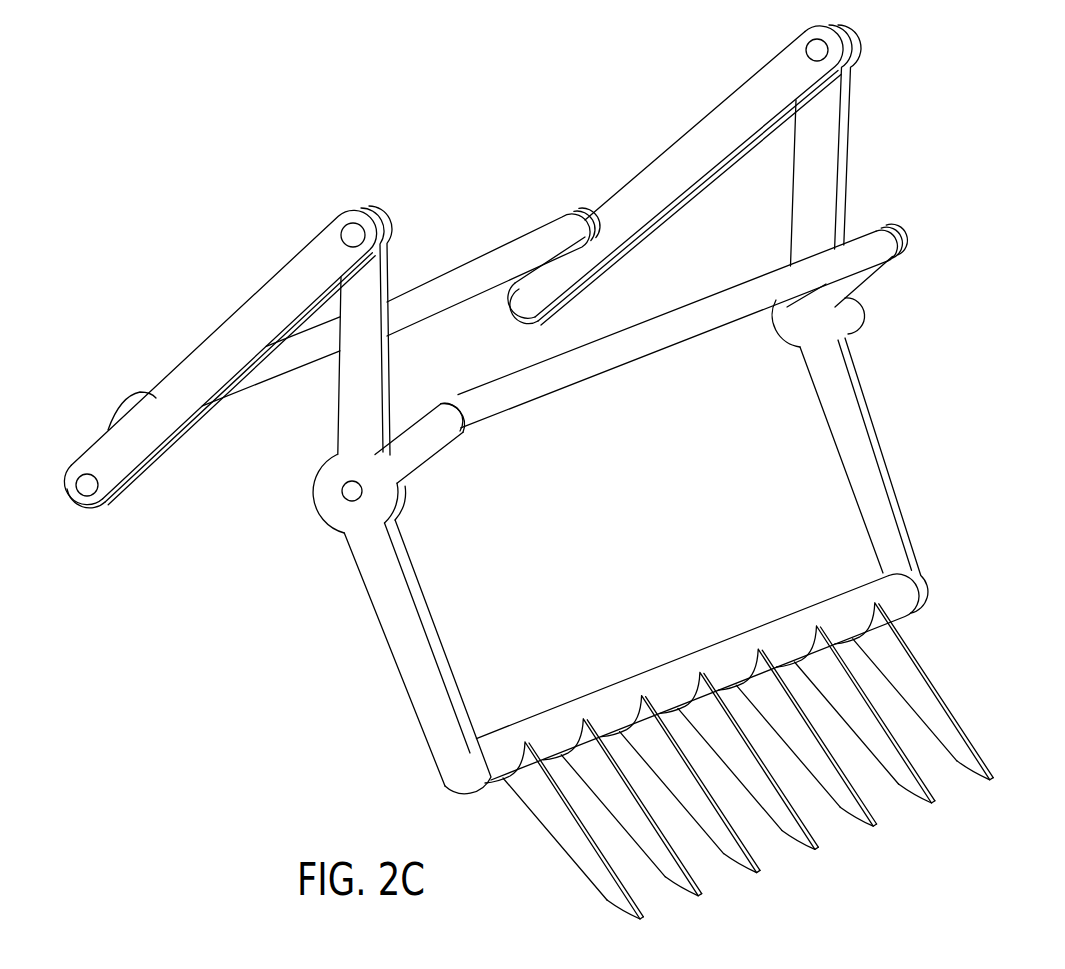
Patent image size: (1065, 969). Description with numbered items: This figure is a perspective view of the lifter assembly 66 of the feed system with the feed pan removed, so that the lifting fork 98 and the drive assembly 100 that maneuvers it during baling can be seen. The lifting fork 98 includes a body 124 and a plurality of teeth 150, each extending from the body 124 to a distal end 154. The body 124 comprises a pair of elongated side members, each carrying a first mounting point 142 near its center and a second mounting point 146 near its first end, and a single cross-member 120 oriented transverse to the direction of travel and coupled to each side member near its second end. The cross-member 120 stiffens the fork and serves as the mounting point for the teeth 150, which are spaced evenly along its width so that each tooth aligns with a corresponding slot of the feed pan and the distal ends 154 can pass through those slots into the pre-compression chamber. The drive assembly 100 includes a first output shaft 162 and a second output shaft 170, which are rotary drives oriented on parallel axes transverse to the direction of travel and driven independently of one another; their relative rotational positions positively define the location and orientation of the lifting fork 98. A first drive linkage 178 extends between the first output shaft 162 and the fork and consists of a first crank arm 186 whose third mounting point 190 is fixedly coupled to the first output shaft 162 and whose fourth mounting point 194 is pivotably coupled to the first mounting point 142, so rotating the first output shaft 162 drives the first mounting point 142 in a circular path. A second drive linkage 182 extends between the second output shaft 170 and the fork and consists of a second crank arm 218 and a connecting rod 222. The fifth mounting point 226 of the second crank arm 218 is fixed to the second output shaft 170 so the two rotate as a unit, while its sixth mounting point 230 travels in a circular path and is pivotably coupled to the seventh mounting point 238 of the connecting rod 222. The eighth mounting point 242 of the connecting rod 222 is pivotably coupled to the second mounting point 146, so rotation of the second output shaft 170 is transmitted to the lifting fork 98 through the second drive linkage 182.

The lifter assembly 66 is at (418, 640).
The lifting fork 98 is at (655, 668).
The drive assembly 100 is at (224, 340).
The cross-member 120 is at (720, 645).
The body 124 is at (800, 602).
The first mounting point 142 is at (398, 505).
The second mounting point 146 is at (383, 206).
The teeth 150 is at (893, 758).
The distal end 154 is at (997, 777).
The first output shaft 162 is at (630, 352).
The second output shaft 170 is at (455, 272).
The first drive linkage 178 is at (885, 272).
The second drive linkage 182 is at (268, 300).
The first crank arm 186 is at (428, 455).
The third mounting point 190 is at (443, 410).
The fourth mounting point 194 is at (356, 505).
The second crank arm 218 is at (125, 408).
The connecting rod 222 is at (188, 378).
The fifth mounting point 226 is at (135, 396).
The sixth mounting point 230 is at (88, 497).
The seventh mounting point 238 is at (80, 462).
The eighth mounting point 242 is at (351, 223).